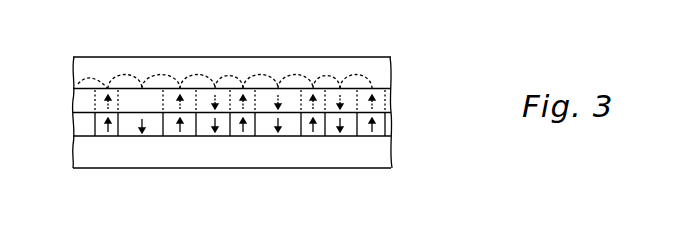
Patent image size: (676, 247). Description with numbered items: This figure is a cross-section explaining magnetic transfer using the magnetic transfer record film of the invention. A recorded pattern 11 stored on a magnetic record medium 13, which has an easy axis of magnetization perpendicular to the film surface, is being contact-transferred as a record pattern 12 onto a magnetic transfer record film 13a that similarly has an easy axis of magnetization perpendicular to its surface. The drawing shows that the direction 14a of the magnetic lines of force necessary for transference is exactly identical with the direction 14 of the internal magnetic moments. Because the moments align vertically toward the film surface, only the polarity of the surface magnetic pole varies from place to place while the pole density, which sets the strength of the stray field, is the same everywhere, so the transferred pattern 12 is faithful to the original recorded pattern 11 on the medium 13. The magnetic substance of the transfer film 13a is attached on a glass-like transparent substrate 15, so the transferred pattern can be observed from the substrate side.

The recorded pattern 11 is at (392, 122).
The record pattern 12 is at (392, 97).
The magnetic record medium 13 is at (72, 126).
The magnetic transfer record film 13a is at (73, 100).
The direction of the internal magnetic moments 14 is at (142, 120).
The direction of the magnetic lines of force 14a is at (142, 107).
The glass-like transparent substrate 15 is at (362, 62).